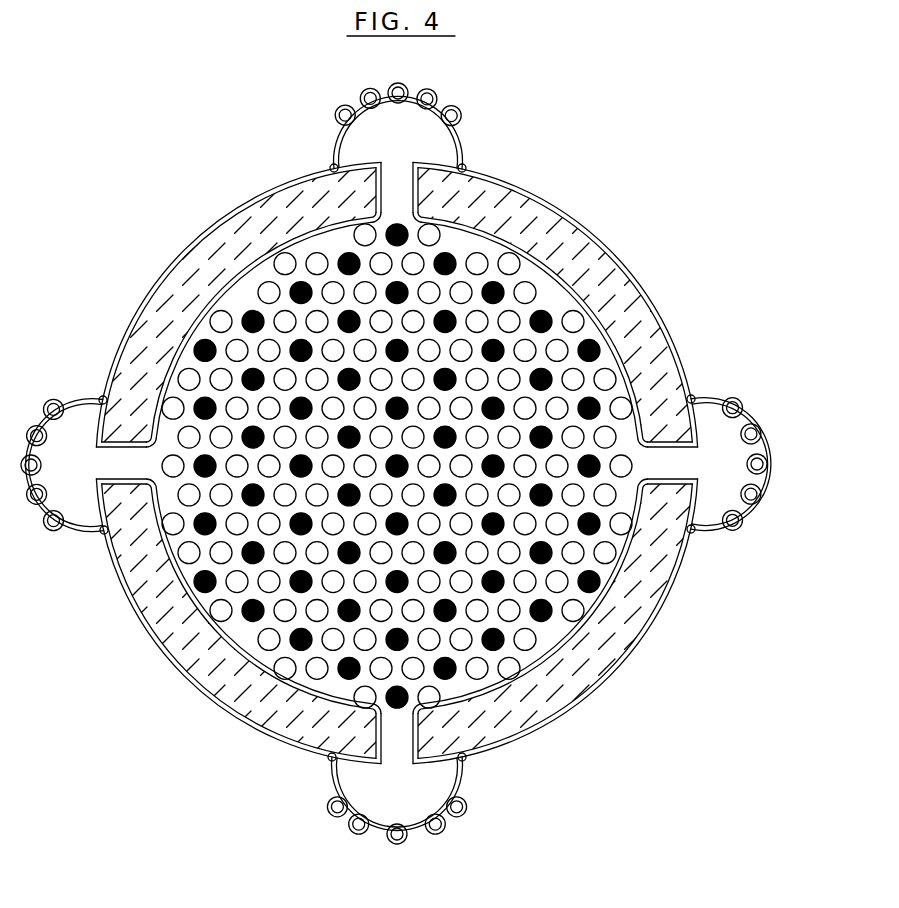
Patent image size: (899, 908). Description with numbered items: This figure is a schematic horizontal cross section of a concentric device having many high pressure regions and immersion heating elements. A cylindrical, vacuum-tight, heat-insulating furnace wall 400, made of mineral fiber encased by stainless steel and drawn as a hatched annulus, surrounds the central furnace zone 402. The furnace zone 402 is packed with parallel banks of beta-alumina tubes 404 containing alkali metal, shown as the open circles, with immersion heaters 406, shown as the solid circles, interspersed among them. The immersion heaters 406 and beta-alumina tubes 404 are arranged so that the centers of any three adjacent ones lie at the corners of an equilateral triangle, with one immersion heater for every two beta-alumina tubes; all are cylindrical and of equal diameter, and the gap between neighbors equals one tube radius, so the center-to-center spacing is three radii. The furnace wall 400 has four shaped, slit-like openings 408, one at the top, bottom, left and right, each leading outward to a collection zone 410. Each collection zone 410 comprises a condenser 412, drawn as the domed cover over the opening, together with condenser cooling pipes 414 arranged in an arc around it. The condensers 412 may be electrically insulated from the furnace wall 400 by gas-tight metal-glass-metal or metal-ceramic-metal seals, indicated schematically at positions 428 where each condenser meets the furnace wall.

The furnace wall 400 is at (628, 302).
The furnace zone 402 is at (550, 393).
The beta-alumina tubes 404 is at (533, 288).
The immersion heaters 406 is at (598, 352).
The slit-like openings 408 is at (395, 178).
The collection zones 410 is at (396, 120).
The condensers 412 is at (458, 127).
The condenser cooling pipes 414 is at (340, 106).
The seals 428 is at (333, 164).